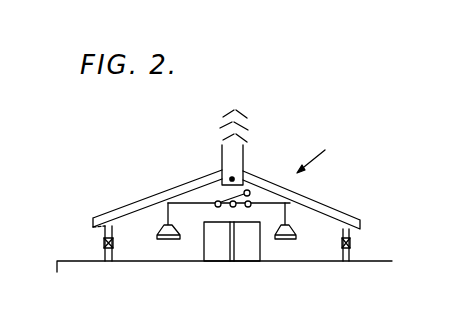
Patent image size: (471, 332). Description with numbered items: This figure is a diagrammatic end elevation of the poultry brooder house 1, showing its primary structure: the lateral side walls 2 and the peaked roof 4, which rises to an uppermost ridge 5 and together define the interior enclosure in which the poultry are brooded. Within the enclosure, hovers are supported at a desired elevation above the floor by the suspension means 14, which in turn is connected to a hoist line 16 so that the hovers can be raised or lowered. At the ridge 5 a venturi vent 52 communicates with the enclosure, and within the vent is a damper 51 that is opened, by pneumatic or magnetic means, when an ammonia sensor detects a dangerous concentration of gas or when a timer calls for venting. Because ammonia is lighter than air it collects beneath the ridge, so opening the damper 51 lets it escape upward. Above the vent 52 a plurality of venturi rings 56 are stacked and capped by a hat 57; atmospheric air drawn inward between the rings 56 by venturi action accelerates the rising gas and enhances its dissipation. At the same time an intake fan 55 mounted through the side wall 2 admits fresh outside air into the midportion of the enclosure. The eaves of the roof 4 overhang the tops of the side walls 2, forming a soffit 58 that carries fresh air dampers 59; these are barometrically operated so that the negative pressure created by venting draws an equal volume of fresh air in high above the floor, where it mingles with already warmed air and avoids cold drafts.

The poultry house 1 is at (318, 155).
The side wall 2 is at (349, 254).
The peaked roof 4 is at (315, 201).
The ridge 5 is at (233, 178).
The suspension means 14 is at (158, 230).
The hoist line 16 is at (295, 229).
The damper 51 is at (230, 178).
The venturi vent 52 is at (247, 132).
The intake fan 55 is at (350, 243).
The venturi rings 56 is at (223, 136).
The hat 57 is at (234, 111).
The soffit 58 is at (100, 227).
The fresh air dampers 59 is at (104, 232).